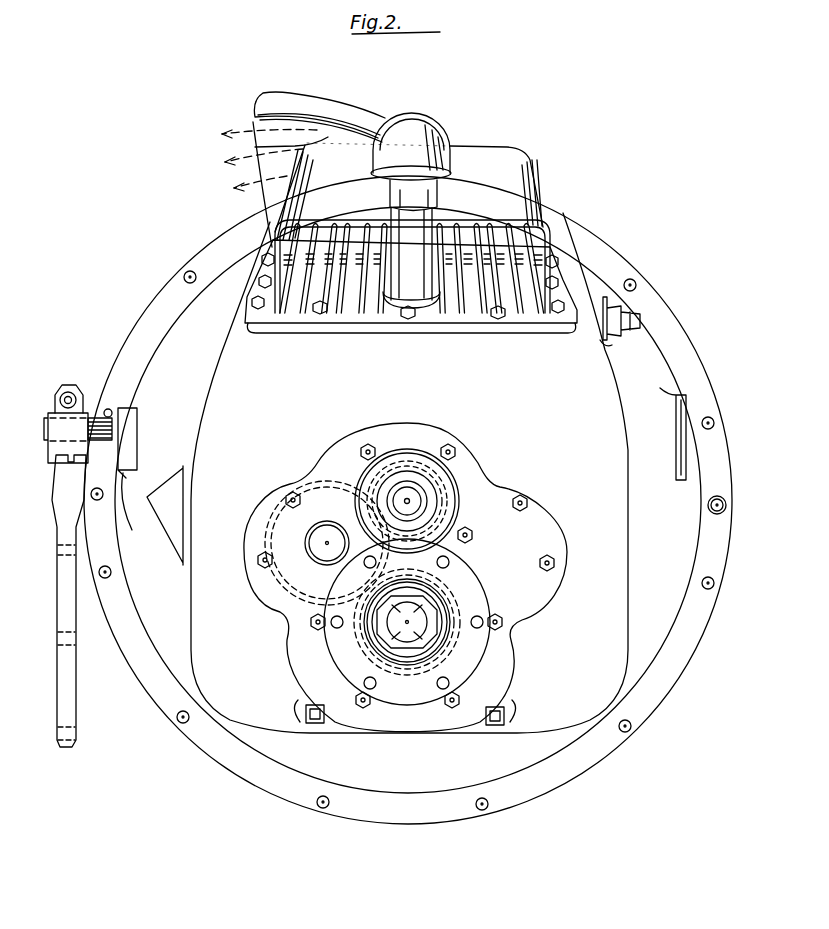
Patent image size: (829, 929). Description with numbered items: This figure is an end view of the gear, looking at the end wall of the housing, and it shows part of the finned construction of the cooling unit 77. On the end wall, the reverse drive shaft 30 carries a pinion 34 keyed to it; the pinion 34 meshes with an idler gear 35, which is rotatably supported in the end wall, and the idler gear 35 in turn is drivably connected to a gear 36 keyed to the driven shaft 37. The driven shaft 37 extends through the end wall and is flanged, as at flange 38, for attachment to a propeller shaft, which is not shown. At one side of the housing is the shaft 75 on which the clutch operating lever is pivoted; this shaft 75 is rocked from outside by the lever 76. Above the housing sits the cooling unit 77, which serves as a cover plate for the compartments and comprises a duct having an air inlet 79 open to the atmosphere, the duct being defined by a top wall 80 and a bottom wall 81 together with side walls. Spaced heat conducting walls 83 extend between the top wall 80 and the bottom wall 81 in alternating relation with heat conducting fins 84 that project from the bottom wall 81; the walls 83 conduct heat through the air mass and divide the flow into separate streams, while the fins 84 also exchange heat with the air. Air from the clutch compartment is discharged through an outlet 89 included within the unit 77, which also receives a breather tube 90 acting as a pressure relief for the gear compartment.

The reverse drive shaft 30 is at (416, 501).
The pinion 34 is at (470, 482).
The idler gear 35 is at (293, 598).
The gear 36 is at (338, 634).
The driven shaft 37 is at (406, 630).
The flange 38 is at (458, 578).
The shaft 75 is at (100, 410).
The lever 76 is at (78, 712).
The cooling unit 77 is at (488, 135).
The air inlet 79 is at (290, 302).
The top wall 80 is at (504, 160).
The bottom wall 81 is at (423, 331).
The heat conducting walls 83 is at (322, 232).
The heat conducting fins 84 is at (348, 296).
The outlet 89 is at (258, 105).
The breather tube 90 is at (437, 194).